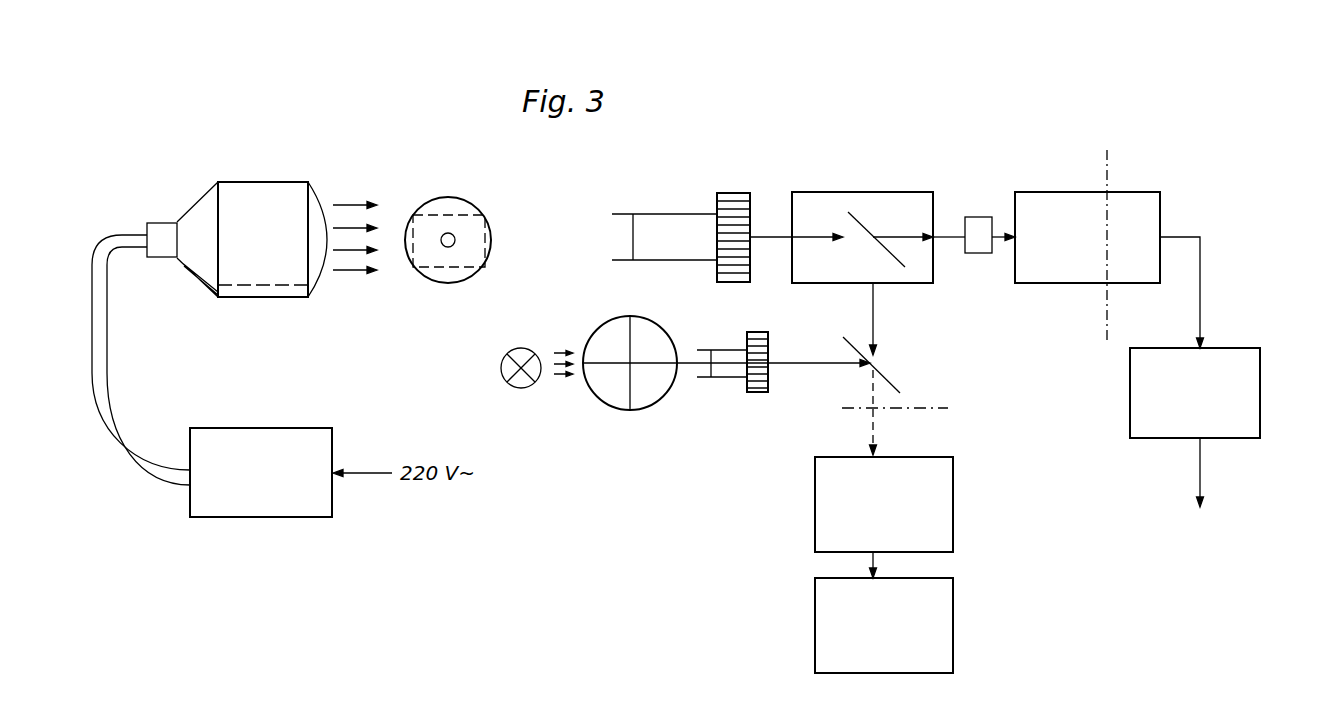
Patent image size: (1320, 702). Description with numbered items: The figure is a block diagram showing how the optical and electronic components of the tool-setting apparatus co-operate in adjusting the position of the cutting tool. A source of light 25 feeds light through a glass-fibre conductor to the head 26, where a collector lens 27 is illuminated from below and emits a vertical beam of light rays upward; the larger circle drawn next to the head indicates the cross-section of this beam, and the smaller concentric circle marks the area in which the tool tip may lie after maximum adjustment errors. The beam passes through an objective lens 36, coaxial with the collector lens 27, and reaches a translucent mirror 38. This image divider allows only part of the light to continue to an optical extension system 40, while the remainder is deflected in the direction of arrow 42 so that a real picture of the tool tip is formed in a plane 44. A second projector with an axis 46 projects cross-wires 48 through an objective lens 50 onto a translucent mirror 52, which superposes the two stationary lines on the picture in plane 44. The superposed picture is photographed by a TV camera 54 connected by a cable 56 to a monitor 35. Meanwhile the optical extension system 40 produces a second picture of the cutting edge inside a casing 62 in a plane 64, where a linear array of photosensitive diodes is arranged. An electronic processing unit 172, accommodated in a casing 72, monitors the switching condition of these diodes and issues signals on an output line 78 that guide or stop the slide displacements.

The source of light 25 is at (325, 450).
The head 26 is at (253, 190).
The collector lens 27 is at (318, 275).
The monitor 35 is at (945, 608).
The objective lens 36 is at (657, 225).
The translucent mirror 38 is at (851, 210).
The optical extension system 40 is at (975, 218).
The arrow 42 is at (876, 320).
The plane 44 is at (948, 408).
The axis 46 is at (683, 362).
The cross-wires 48 is at (516, 350).
The objective lens 50 is at (727, 372).
The translucent mirror 52 is at (848, 346).
The TV camera 54 is at (830, 484).
The cable 56 is at (870, 563).
The casing 62 is at (1138, 200).
The plane 64 is at (1105, 322).
The casing 72 is at (1216, 364).
The output line 78 is at (1200, 470).
The electronic processing unit 172 is at (1232, 358).